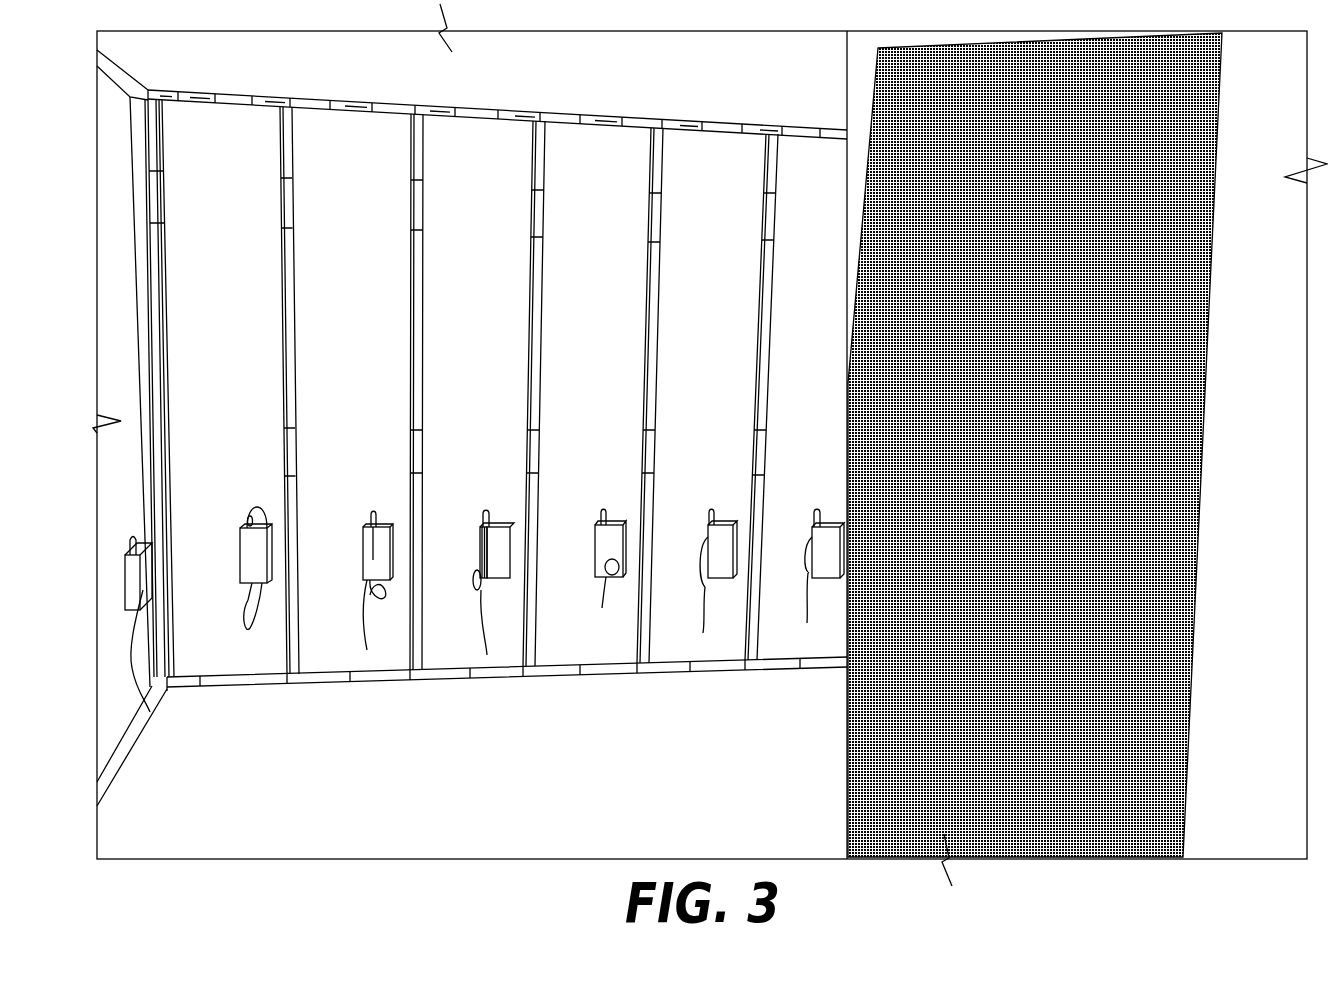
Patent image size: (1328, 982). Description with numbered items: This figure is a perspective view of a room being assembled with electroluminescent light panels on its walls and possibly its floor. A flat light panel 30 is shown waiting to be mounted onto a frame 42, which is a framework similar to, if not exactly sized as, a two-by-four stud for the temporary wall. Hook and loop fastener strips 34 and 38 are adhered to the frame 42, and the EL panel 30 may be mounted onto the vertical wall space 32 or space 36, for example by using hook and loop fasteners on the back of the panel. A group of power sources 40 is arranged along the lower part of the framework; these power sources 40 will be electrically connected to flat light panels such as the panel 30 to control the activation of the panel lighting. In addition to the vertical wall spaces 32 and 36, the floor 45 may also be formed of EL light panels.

The flat light panel 30 is at (1007, 97).
The space 32 is at (218, 137).
The hook and loop fastener strip 34 is at (280, 205).
The space 36 is at (347, 140).
The hook and loop fastener strip 38 is at (410, 210).
The power source 40 is at (367, 587).
The frame 42 is at (747, 507).
The floor 45 is at (422, 820).